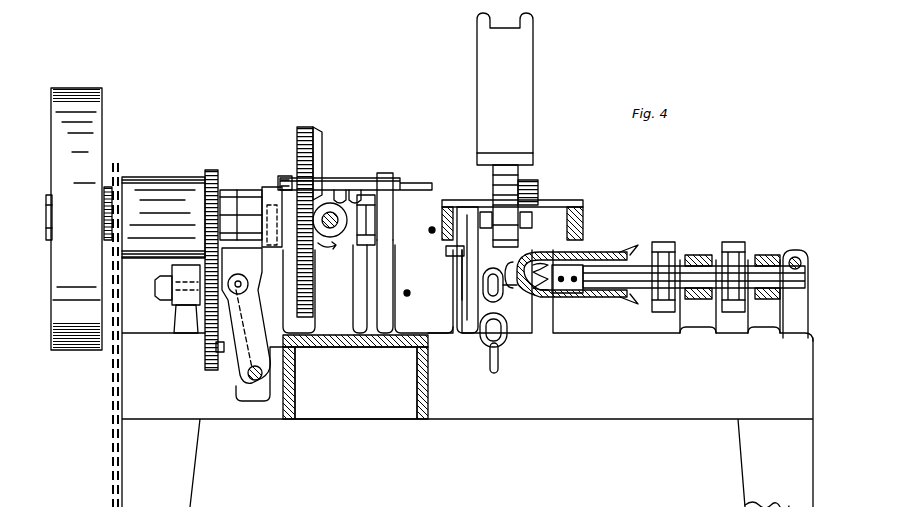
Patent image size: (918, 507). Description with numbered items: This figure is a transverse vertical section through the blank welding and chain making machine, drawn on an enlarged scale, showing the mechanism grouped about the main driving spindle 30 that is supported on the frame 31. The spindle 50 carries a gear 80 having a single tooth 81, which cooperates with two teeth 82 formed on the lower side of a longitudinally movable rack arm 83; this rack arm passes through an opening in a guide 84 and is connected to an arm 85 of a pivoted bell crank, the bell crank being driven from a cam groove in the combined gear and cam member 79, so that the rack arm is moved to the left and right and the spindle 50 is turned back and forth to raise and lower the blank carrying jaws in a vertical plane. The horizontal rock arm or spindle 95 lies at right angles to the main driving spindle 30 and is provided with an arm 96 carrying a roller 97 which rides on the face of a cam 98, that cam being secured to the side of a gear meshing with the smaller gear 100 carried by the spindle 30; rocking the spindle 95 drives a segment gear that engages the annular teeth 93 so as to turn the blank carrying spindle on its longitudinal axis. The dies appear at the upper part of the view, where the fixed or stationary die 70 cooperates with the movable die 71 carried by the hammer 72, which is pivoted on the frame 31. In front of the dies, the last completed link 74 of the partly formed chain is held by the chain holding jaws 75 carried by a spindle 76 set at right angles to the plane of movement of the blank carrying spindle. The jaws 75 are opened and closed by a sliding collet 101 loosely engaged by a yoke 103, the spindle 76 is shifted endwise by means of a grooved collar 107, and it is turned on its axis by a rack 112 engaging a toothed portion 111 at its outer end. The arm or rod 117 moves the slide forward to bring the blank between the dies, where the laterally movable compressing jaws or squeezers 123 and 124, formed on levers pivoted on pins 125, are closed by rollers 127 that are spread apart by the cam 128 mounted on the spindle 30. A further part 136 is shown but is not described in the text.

The main driving spindle 30 is at (236, 192).
The frame 31 is at (410, 420).
The spindle 50 is at (331, 240).
The stationary die 70 is at (497, 268).
The movable die 71 is at (530, 160).
The hammer 72 is at (527, 115).
The last completed link 74 is at (462, 296).
The chain holding jaws 75 is at (595, 258).
The spindle 76 is at (612, 265).
The combined gear and cam member 79 is at (315, 127).
The gear 80 is at (338, 233).
The single tooth 81 is at (372, 208).
The two teeth 82 is at (356, 190).
The rack arm 83 is at (405, 180).
The guide 84 is at (386, 173).
The bell crank arm 85 is at (272, 188).
The annular teeth 93 is at (207, 336).
The rock arm or spindle 95 is at (254, 381).
The arm 96 is at (218, 356).
The roller 97 is at (240, 274).
The cam 98 is at (213, 172).
The gear 100 is at (205, 176).
The sliding collet 101 is at (659, 242).
The yoke 103 is at (686, 262).
The grooved collar 107 is at (750, 245).
The toothed portion 111 is at (796, 290).
The rack 112 is at (798, 252).
The arm or rod 117 is at (408, 291).
The compressing jaw 123 is at (446, 251).
The compressing jaw 124 is at (578, 250).
The pins 125 is at (474, 200).
The rollers 127 is at (524, 196).
The cam 128 is at (506, 178).
The pin 136 is at (432, 227).